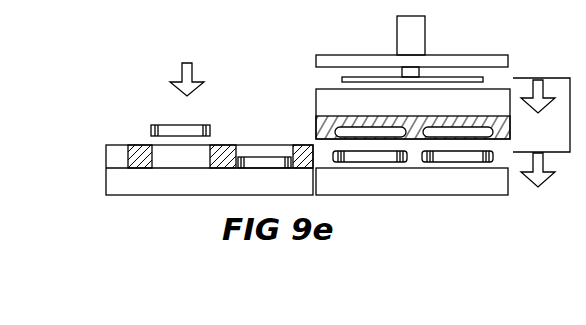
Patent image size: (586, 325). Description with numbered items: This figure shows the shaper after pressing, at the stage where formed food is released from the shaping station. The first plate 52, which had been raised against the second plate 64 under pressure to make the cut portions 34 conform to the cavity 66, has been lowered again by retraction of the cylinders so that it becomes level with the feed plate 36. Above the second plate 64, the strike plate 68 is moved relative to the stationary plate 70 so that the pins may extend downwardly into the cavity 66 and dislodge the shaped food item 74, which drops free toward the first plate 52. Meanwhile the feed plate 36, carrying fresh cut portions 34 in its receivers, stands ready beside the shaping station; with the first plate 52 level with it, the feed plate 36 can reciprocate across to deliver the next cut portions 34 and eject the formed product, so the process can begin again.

The feed plate 36 is at (114, 158).
The cut portions 34 is at (180, 130).
The stationary plate 70 is at (364, 59).
The strike plate 68 is at (455, 80).
The second plate 64 is at (328, 107).
The cavity 66 is at (362, 131).
The shaped food item 74 is at (440, 157).
The first plate 52 is at (489, 182).